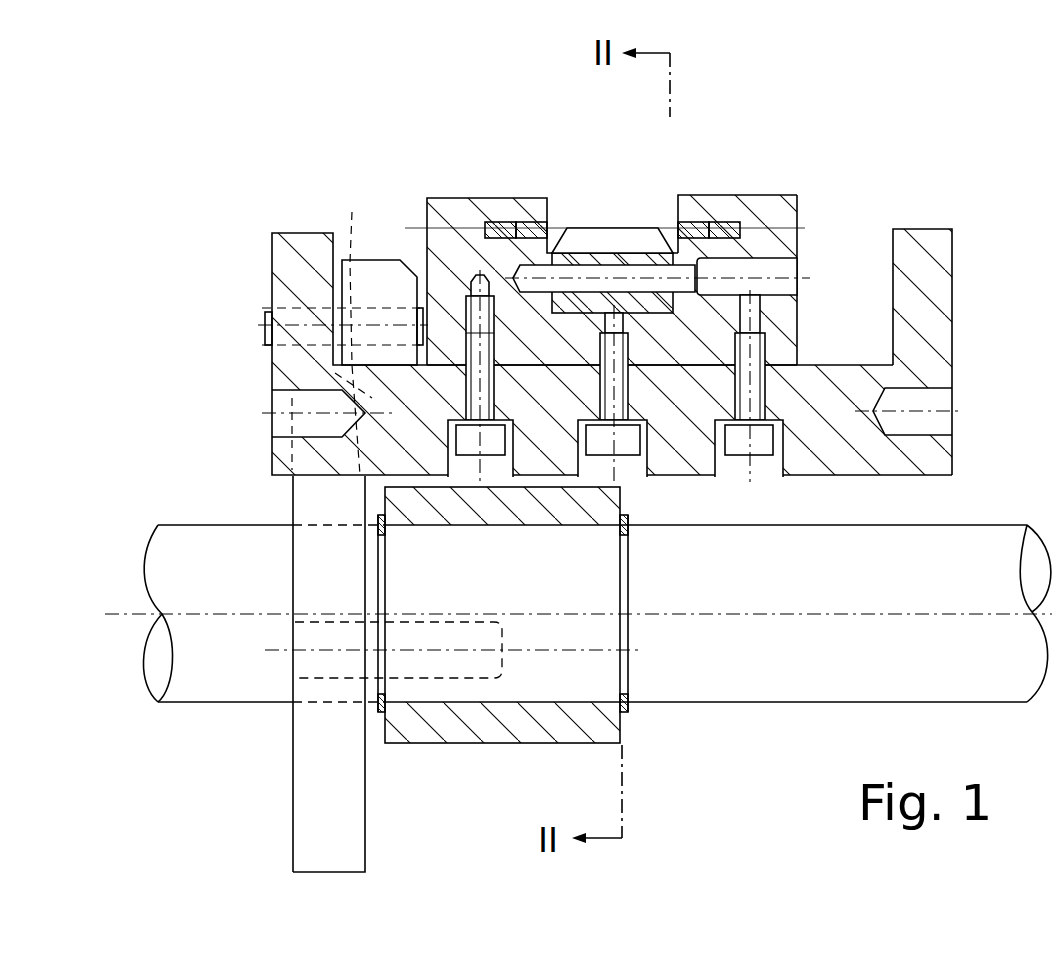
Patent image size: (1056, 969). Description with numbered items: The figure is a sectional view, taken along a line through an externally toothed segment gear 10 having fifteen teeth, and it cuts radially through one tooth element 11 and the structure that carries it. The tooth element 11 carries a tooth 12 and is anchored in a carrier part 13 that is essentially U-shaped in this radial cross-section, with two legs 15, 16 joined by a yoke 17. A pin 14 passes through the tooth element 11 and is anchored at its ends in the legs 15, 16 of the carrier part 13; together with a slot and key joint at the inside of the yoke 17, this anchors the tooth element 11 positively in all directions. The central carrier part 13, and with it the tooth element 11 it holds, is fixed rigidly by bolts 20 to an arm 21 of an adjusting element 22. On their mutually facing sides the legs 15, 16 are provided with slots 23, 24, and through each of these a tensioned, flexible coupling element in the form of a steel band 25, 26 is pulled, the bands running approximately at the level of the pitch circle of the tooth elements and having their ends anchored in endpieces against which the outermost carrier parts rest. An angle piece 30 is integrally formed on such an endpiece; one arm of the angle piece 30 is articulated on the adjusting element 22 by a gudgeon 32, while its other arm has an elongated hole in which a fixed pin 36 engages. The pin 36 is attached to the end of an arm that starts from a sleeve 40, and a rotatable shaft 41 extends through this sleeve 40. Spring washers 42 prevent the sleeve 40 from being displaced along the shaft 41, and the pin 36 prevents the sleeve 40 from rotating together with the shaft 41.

The segment gear 10 is at (745, 108).
The tooth element 11 is at (588, 214).
The tooth 12 is at (643, 232).
The carrier part 13 is at (782, 186).
The pin 14 is at (618, 238).
The leg 15 is at (436, 210).
The leg 16 is at (793, 218).
The yoke 17 is at (658, 352).
The bolts 20 is at (630, 450).
The arm 21 is at (836, 453).
The adjusting element 22 is at (962, 292).
The slot 23 is at (498, 224).
The slot 24 is at (698, 224).
The steel band 25 is at (514, 224).
The steel band 26 is at (733, 224).
The angle piece 30 is at (280, 497).
The gudgeon 32 is at (343, 267).
The fixed pin 36 is at (300, 716).
The sleeve 40 is at (463, 727).
The shaft 41 is at (737, 705).
The spring washers 42 is at (379, 722).